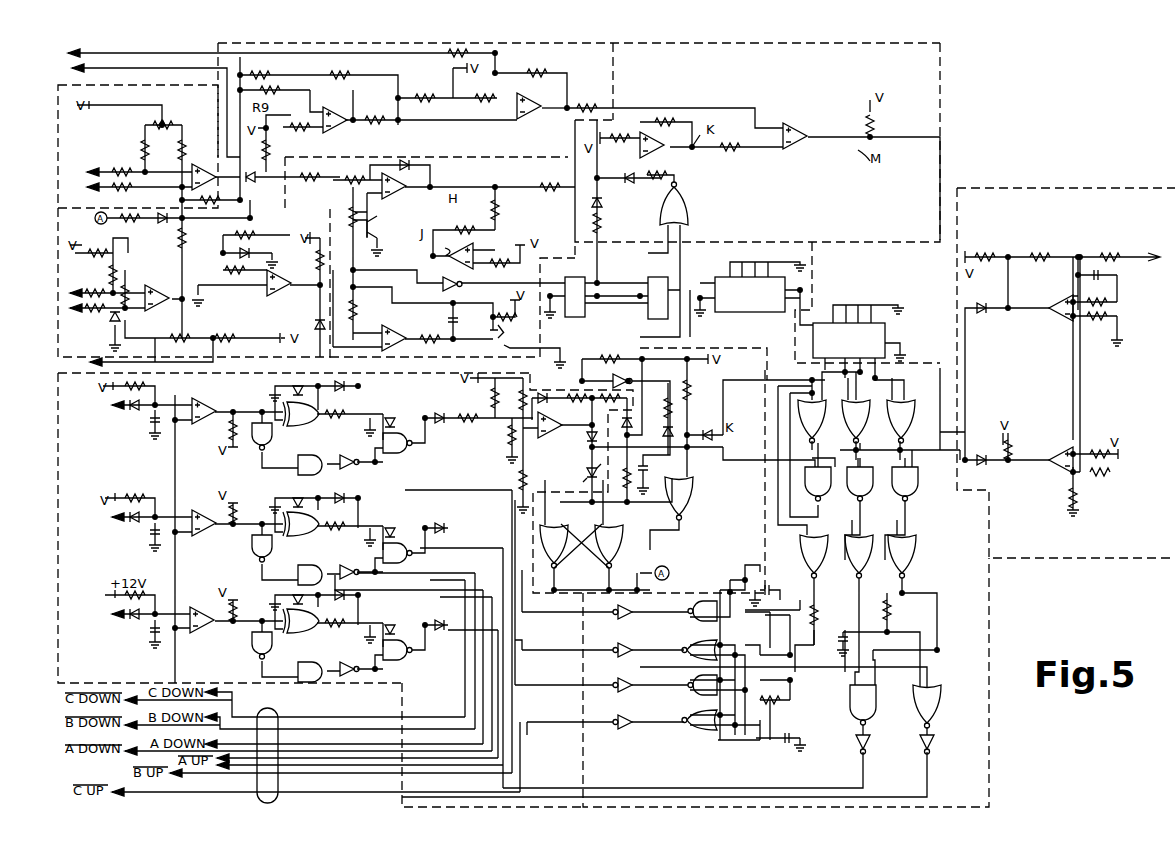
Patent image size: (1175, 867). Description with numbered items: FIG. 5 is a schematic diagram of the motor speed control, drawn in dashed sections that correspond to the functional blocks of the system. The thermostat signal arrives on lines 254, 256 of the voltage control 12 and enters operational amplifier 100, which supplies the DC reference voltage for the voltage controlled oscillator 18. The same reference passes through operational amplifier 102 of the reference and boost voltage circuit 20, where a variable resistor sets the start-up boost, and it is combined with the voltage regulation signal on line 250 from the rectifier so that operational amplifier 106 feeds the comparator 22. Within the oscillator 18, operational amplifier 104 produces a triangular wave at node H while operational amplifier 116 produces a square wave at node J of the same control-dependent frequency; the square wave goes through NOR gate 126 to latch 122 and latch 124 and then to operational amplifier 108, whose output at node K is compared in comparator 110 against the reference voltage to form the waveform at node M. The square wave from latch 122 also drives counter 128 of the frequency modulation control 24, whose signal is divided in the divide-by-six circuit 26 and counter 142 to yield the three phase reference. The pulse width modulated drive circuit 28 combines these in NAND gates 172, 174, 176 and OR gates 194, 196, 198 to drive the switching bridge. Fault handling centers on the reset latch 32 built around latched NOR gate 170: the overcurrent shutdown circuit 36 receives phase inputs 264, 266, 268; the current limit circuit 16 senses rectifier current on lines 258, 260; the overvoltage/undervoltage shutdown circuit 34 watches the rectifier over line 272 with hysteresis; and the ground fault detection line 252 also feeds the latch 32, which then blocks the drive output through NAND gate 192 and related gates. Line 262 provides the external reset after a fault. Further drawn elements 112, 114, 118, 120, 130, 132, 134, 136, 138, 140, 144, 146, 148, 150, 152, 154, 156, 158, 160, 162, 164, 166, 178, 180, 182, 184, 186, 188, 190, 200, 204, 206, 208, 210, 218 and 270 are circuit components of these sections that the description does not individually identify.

The voltage control circuit 12 is at (78, 139).
The current limit circuit 16 is at (290, 246).
The voltage controlled oscillator 18 is at (545, 218).
The reference and boost voltage circuit 20 is at (582, 70).
The comparator 22 is at (770, 86).
The frequency modulation control circuit 24 is at (752, 336).
The divide by six circuit 26 is at (882, 281).
The pulse width modulated drive circuitry 28 is at (830, 741).
The reset latch 32 is at (732, 497).
The overvoltage/undervoltage shutdown circuit 34 is at (1140, 523).
The overcurrent shutdown circuit 36 is at (82, 583).
The operational amplifier 100 is at (207, 164).
The operational amplifier 102 is at (342, 118).
The operational amplifier 104 is at (404, 192).
The operational amplifier 106 is at (533, 114).
The operational amplifier 108 is at (675, 147).
The comparator 110 is at (804, 142).
The operational amplifier 112 is at (158, 310).
The operational amplifier 114 is at (284, 294).
The operational amplifier 116 is at (488, 251).
The operational amplifier 118 is at (404, 332).
The inverter 120 is at (470, 272).
The latch 122 is at (585, 312).
The latch 124 is at (653, 278).
The NOR gate 126 is at (690, 204).
The counter 128 is at (761, 303).
The inverter 130 is at (616, 378).
The comparator 132 is at (216, 408).
The NAND gate 134 is at (261, 423).
The exclusive OR gate 136 is at (308, 432).
The NAND gate 138 is at (414, 455).
The operational amplifier 140 is at (552, 442).
The counter 142 is at (862, 349).
The operational amplifier 144 is at (1053, 333).
The AND gate 146 is at (298, 470).
The inverter 148 is at (345, 454).
The zener diode 150 is at (587, 472).
The NOR gate 152 is at (688, 496).
The NOR gate 154 is at (805, 428).
The NOR gate 156 is at (856, 424).
The NOR gate 158 is at (900, 423).
The comparator 160 is at (205, 510).
The NAND gate 162 is at (256, 548).
The exclusive OR gate 164 is at (283, 514).
The NAND gate 166 is at (414, 565).
The NOR gate 170 is at (638, 549).
The NAND gate 172 is at (822, 490).
The NAND gate 174 is at (864, 490).
The NAND gate 176 is at (916, 493).
The operational amplifier 178 is at (1052, 478).
The AND gate 180 is at (298, 578).
The inverter 182 is at (335, 566).
The comparator 184 is at (203, 607).
The exclusive OR gate 186 is at (283, 617).
The NAND gate 188 is at (408, 662).
The inverter 190 is at (618, 618).
The NAND gate 192 is at (698, 620).
The OR gate 194 is at (815, 568).
The OR gate 196 is at (859, 568).
The OR gate 198 is at (908, 563).
The inverter 200 is at (618, 656).
The NAND gate 204 is at (255, 653).
The AND gate 206 is at (298, 672).
The inverter 208 is at (350, 661).
The inverter 210 is at (618, 691).
The inverter 218 is at (618, 727).
The line 250 is at (155, 52).
The ground fault detection line 252 is at (125, 68).
The line 254 is at (122, 156).
The line 256 is at (120, 186).
The line 258 is at (71, 294).
The line 260 is at (71, 312).
The line 262 is at (137, 358).
The input 264 is at (128, 405).
The input 266 is at (128, 517).
The input 268 is at (130, 614).
The connector 270 is at (270, 708).
The line 272 is at (1137, 255).